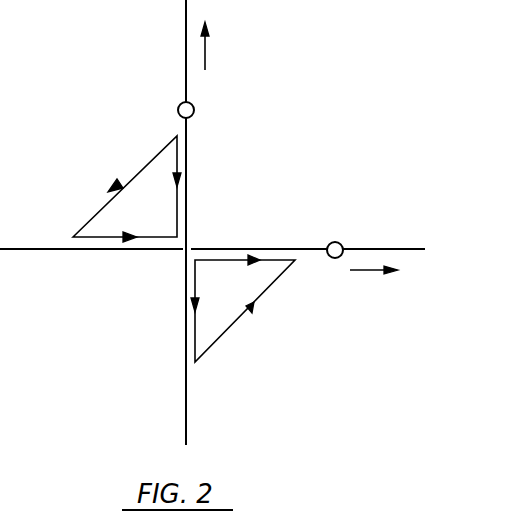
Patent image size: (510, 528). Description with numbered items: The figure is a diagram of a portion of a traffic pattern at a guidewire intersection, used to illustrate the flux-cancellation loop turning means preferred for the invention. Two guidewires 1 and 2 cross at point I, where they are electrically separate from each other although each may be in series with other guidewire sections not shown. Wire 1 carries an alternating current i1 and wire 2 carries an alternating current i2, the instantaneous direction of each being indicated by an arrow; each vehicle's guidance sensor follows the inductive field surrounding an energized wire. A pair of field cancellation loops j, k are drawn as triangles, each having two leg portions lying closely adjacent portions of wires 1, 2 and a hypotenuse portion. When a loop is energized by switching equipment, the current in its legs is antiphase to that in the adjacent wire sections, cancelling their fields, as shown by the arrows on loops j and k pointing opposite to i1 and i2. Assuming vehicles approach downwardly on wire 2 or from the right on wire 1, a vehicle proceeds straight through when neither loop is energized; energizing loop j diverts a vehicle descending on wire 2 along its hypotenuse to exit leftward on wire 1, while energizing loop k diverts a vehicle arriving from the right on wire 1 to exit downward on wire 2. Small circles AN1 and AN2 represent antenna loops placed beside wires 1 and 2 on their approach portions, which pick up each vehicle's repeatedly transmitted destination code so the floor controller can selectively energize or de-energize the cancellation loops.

The guidewire 2 is at (186, 42).
The guidewire 1 is at (41, 250).
The crossing point I is at (183, 256).
The antenna loop AN1 is at (328, 245).
The antenna loop AN2 is at (194, 113).
The field cancellation loop j is at (104, 200).
The field cancellation loop k is at (236, 327).
The alternating current i1 is at (369, 286).
The alternating current i2 is at (215, 48).